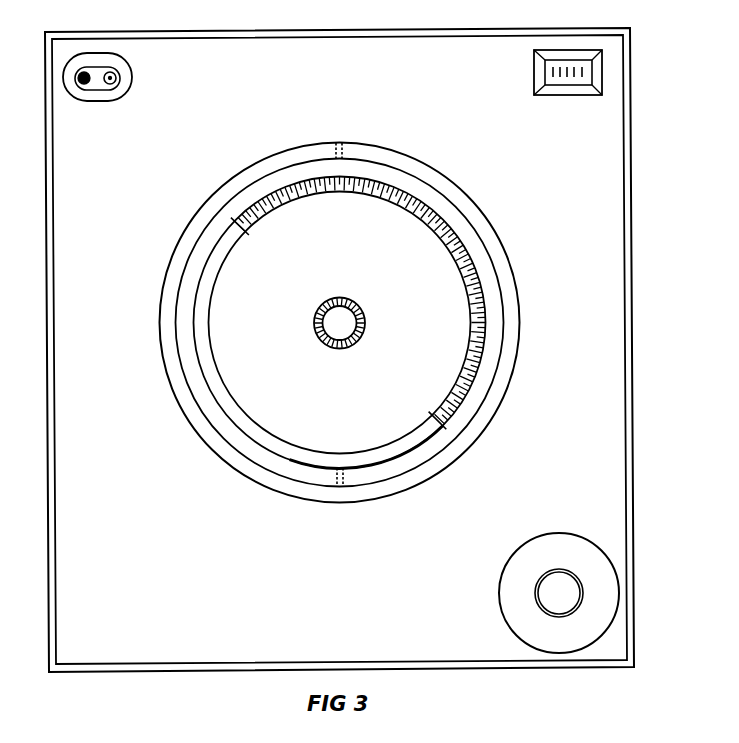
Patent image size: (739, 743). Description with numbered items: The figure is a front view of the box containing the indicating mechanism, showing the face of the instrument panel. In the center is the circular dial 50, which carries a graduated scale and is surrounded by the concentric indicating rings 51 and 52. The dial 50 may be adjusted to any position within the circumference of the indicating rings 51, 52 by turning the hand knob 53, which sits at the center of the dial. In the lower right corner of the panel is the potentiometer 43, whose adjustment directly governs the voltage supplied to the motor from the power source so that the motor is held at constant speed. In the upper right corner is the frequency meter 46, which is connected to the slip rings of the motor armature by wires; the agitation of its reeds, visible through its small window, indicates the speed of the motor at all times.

The potentiometer 43 is at (582, 590).
The frequency meter 46 is at (602, 68).
The dial 50 is at (443, 241).
The indicating ring 51 is at (418, 477).
The indicating ring 52 is at (363, 475).
The hand knob 53 is at (364, 318).